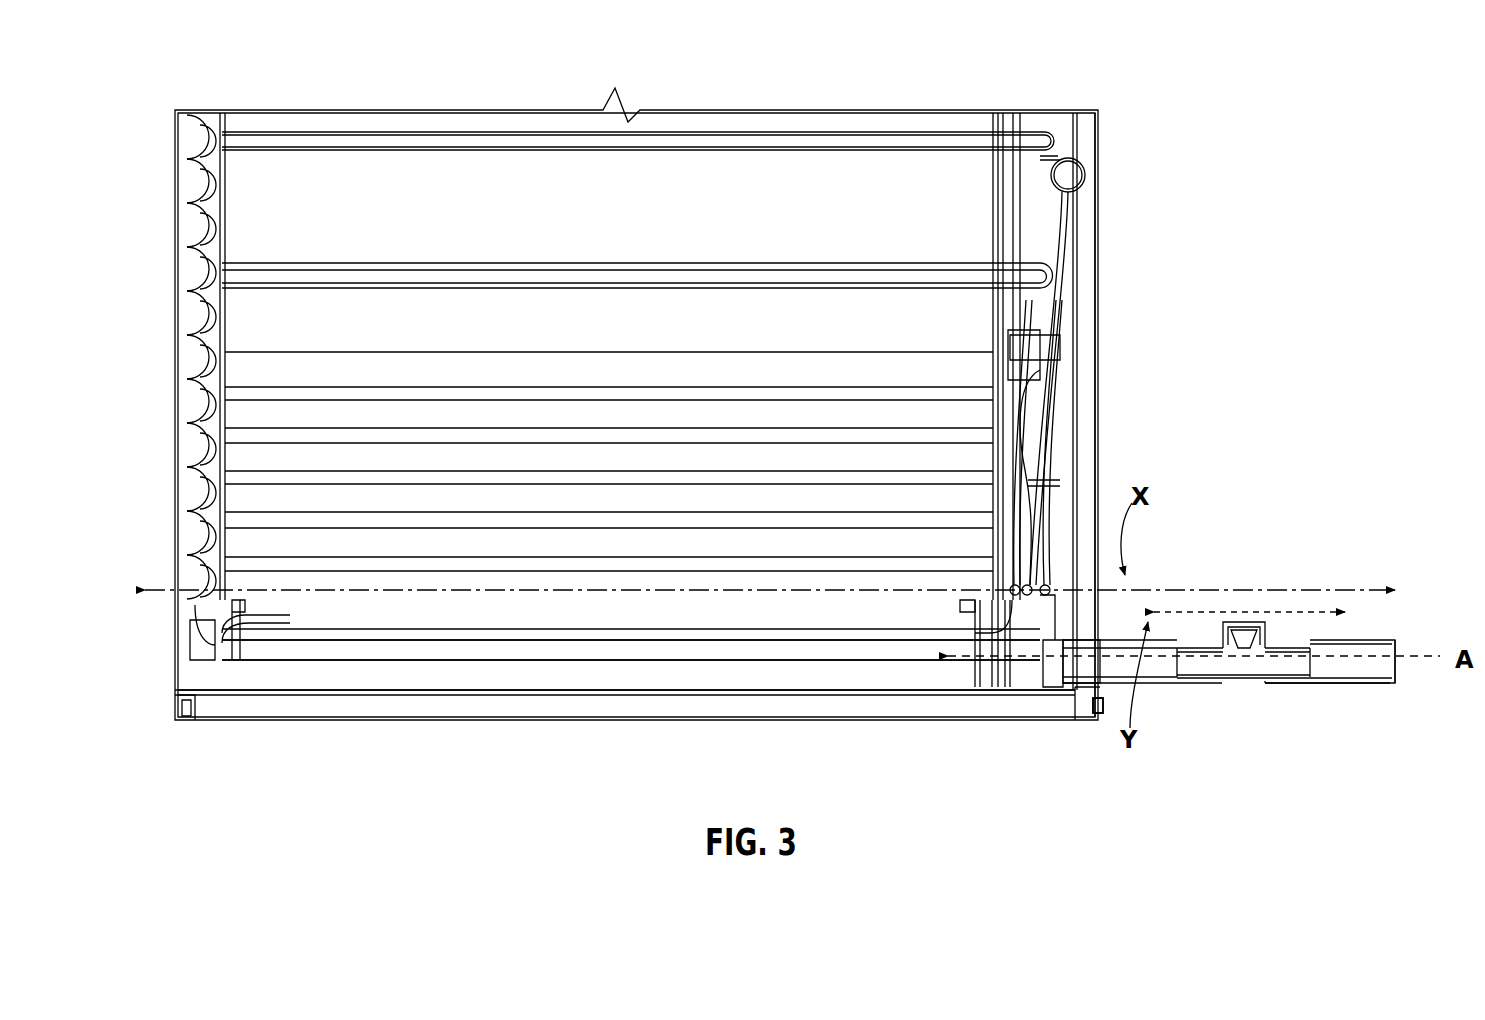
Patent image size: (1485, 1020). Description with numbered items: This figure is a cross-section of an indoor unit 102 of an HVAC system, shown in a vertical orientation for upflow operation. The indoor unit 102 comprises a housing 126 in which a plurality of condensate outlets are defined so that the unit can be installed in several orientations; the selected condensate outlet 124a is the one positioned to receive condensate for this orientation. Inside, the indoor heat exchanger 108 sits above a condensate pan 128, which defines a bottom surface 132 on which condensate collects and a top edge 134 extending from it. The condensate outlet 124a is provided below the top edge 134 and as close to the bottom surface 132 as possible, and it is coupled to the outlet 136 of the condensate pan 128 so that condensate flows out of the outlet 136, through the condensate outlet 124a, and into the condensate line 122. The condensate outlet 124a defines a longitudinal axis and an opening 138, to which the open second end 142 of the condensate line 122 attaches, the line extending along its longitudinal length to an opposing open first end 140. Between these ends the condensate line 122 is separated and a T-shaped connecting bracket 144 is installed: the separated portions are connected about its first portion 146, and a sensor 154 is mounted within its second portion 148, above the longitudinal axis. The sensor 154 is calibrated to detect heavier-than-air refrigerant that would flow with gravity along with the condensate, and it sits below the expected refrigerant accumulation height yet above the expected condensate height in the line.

The indoor unit 102 is at (849, 70).
The indoor heat exchanger 108 is at (410, 491).
The condensate line 122 is at (1330, 650).
The condensate outlet 124a is at (1093, 690).
The housing 126 is at (1087, 116).
The condensate pan 128 is at (685, 668).
The bottom surface 132 is at (498, 682).
The top edge 134 is at (858, 665).
The outlet 136 is at (1043, 658).
The opening 138 is at (1098, 705).
The open first end 140 is at (1400, 682).
The open second end 142 is at (1068, 662).
The connecting bracket 144 is at (1284, 704).
The first portion 146 is at (1216, 688).
The second portion 148 is at (1232, 620).
The sensor 154 is at (1245, 628).